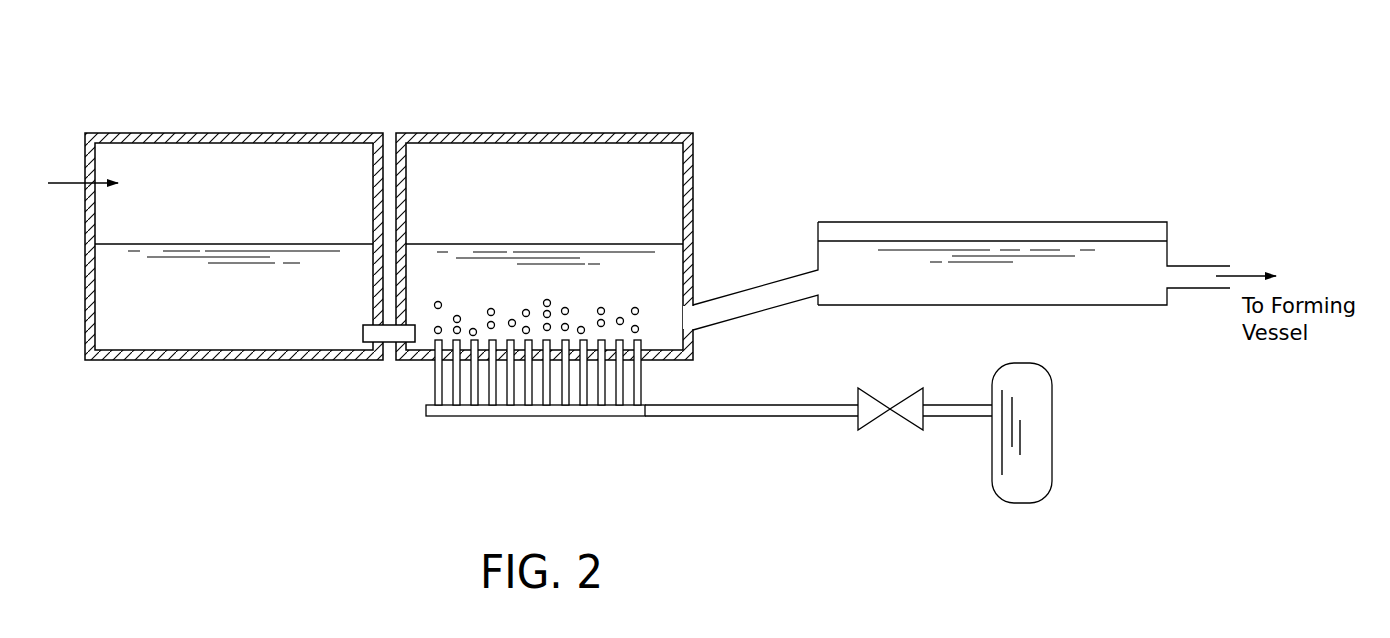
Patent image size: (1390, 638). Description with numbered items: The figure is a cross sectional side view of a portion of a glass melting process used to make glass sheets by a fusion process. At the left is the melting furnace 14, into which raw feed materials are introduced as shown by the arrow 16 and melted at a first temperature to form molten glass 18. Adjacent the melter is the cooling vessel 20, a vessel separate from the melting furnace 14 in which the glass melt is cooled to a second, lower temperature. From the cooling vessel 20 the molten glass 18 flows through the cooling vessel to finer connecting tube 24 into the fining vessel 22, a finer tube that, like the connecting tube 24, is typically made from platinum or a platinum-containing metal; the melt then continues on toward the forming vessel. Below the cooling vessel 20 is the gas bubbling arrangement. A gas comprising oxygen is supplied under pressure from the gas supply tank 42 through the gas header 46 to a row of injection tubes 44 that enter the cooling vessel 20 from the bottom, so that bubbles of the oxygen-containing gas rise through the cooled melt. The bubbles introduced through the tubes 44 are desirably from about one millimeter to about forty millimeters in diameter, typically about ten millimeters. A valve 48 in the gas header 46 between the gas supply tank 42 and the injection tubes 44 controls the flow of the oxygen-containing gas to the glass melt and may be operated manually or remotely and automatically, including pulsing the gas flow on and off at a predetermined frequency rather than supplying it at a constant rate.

The melting furnace 14 is at (233, 112).
The arrow 16 is at (60, 188).
The molten glass 18 is at (337, 293).
The cooling vessel 20 is at (538, 112).
The fining vessel 22 is at (954, 206).
The cooling vessel to finer connecting tube 24 is at (795, 270).
The gas supply tank 42 is at (1054, 440).
The injection tubes 44 is at (432, 390).
The gas header 46 is at (782, 418).
The valve 48 is at (866, 430).